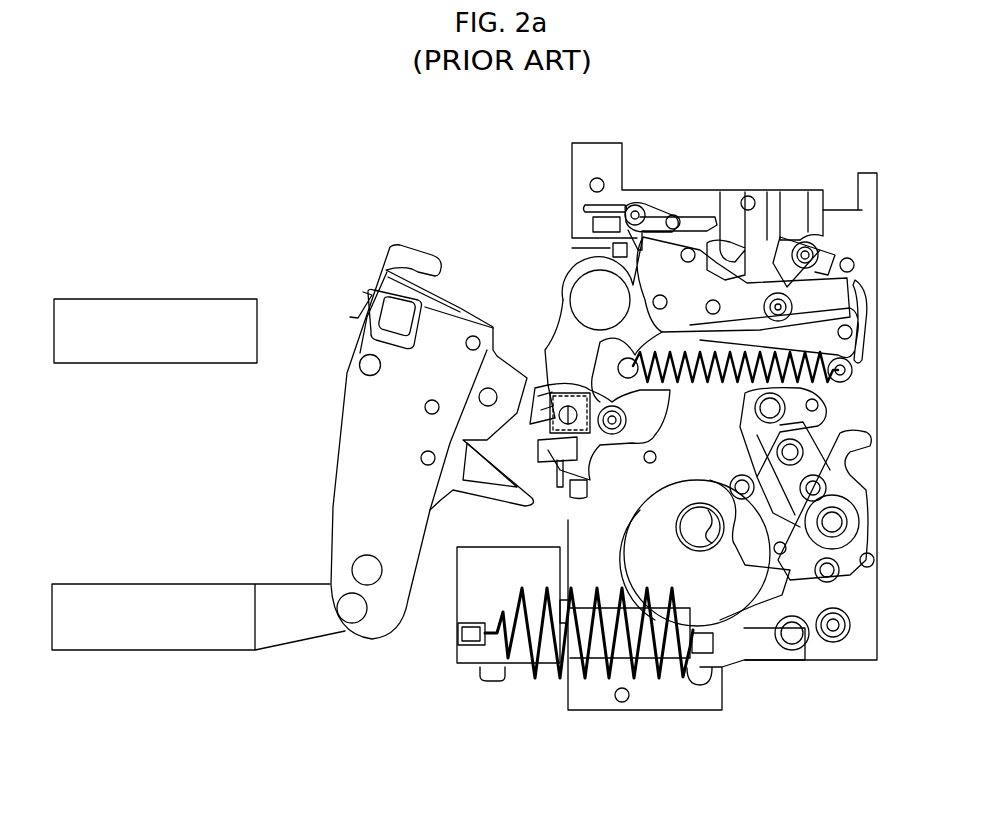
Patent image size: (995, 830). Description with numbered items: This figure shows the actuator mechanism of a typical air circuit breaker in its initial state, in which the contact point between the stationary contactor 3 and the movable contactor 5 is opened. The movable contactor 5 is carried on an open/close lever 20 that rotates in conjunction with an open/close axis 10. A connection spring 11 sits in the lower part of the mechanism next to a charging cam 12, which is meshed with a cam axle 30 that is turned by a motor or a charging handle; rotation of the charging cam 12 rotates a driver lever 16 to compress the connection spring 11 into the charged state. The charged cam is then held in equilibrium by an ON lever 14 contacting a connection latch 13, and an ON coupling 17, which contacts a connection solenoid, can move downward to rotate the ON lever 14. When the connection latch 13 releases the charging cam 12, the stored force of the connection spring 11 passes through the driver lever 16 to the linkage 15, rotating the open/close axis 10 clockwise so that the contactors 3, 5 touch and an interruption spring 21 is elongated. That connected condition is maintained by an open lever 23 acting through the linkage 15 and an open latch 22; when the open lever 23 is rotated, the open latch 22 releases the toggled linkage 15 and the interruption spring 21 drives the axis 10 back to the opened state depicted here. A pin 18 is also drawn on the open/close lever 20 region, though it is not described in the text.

The stationary contactor 3 is at (214, 300).
The movable contactor 5 is at (398, 262).
The open/close axis 10 is at (583, 282).
The connection spring 11 is at (529, 660).
The charging cam 12 is at (737, 606).
The connection latch 13 is at (874, 277).
The ON lever 14 is at (810, 233).
The linkage 15 is at (764, 459).
The driver lever 16 is at (855, 483).
The ON coupling 17 is at (735, 240).
The pin 18 is at (596, 432).
The open/close lever 20 is at (563, 376).
The interruption spring 21 is at (844, 393).
The open latch 22 is at (836, 316).
The open lever 23 is at (650, 207).
The cam axle 30 is at (697, 535).